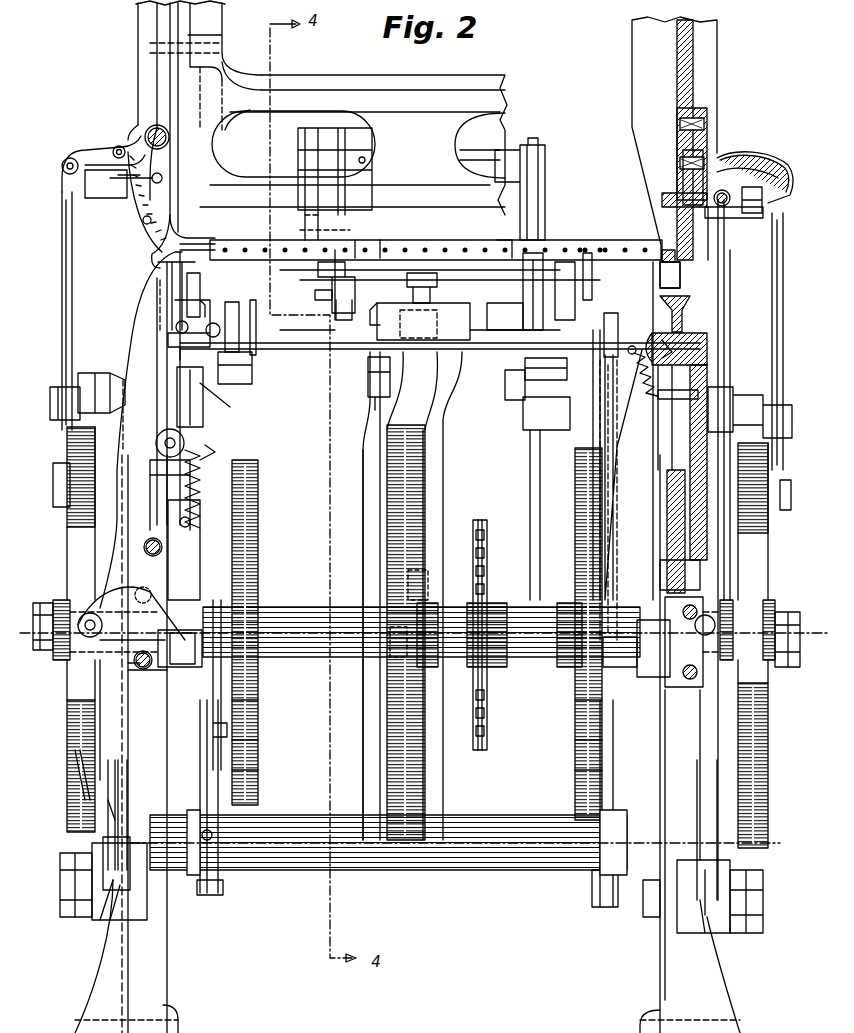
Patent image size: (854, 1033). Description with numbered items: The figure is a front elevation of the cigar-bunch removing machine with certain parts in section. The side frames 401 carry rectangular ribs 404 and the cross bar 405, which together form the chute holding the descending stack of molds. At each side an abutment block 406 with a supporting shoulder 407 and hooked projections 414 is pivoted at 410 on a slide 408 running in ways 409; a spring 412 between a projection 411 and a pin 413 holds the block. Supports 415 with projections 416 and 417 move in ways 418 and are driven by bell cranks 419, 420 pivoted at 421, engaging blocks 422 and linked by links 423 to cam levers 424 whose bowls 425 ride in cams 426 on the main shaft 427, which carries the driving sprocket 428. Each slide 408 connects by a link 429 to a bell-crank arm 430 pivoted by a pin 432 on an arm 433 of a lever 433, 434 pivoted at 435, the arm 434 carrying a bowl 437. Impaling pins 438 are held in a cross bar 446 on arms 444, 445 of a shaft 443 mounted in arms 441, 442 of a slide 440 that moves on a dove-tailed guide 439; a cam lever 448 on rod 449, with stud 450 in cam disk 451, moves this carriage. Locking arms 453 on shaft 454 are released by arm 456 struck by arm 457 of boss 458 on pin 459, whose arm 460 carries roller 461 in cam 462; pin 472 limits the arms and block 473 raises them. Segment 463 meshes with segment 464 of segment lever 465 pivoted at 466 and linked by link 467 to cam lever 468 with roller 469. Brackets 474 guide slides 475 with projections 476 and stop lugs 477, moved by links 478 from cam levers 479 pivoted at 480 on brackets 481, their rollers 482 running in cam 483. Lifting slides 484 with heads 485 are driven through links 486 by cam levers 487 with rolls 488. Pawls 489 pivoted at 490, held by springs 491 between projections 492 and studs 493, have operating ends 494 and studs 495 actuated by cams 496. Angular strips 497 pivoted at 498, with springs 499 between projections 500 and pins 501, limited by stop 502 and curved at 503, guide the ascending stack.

The side frames 401 is at (707, 975).
The rectangular ribs 404 is at (216, 18).
The cross bar 405 is at (353, 145).
The movable blocks 406 is at (192, 300).
The supporting shoulder 407 is at (185, 285).
The slide 408 is at (708, 340).
The ways 409 is at (688, 577).
The pivot 410 is at (686, 336).
The projection 411 is at (628, 343).
The spring 412 is at (605, 395).
The pin 413 is at (665, 400).
The hooked projections 414 is at (658, 268).
The supports 415 is at (708, 233).
The engaging projection 416 is at (662, 198).
The engaging projection 417 is at (660, 252).
The ways 418 is at (782, 168).
The bell crank arm 419 is at (738, 210).
The bell crank arm 420 is at (427, 169).
The pivot 421 is at (728, 180).
The pivoted block 422 is at (722, 212).
The links 423 is at (72, 272).
The cam levers 424 is at (62, 447).
The bowls 425 is at (55, 492).
The cams 426 is at (80, 547).
The main shaft 427 is at (298, 645).
The driving sprocket 428 is at (490, 553).
The link 429 is at (128, 697).
The bell-crank lever arm 430 is at (135, 845).
The pin 432 is at (90, 880).
The bell-crank lever arm 433 is at (95, 915).
The bell-crank lever arm 434 is at (100, 720).
The pivot 435 is at (60, 880).
The bowls 437 is at (70, 665).
The impaling pins 438 is at (598, 248).
The dove-tailed guide 439 is at (403, 322).
The slide 440 is at (435, 290).
The arm 441 is at (505, 226).
The arm 442 is at (335, 180).
The shaft 443 is at (475, 165).
The arm 444 is at (540, 208).
The arm 445 is at (300, 158).
The cross bar 446 is at (432, 250).
The cam lever 448 is at (437, 378).
The bar or rod 449 is at (645, 825).
The cam stud 450 is at (425, 572).
The cam disk 451 is at (406, 632).
The locking arms 453 is at (548, 274).
The shaft 454 is at (385, 250).
The arm 456 is at (543, 291).
The arm 457 is at (525, 392).
The boss 458 is at (537, 515).
The pin 459 is at (523, 420).
The arm 460 is at (575, 490).
The cam roller 461 is at (568, 595).
The cam 462 is at (597, 500).
The segment 463 is at (375, 145).
The segment 464 is at (370, 237).
The segment lever 465 is at (305, 295).
The pivot 466 is at (333, 310).
The link 467 is at (366, 380).
The cam lever 468 is at (370, 466).
The stud or roller 469 is at (385, 660).
The pin 472 is at (572, 291).
The block 473 is at (504, 316).
The bracket 474 is at (393, 379).
The slide 475 is at (422, 336).
The projection 476 is at (434, 322).
The stop lug 477 is at (440, 335).
The link 478 is at (205, 420).
The cam levers 479 is at (245, 455).
The pivot 480 is at (195, 668).
The brackets 481 is at (164, 585).
The cam rollers 482 is at (259, 735).
The cam 483 is at (259, 565).
The lifting slides 484 is at (218, 428).
The head 485 is at (170, 343).
The link 486 is at (212, 722).
The cam lever 487 is at (222, 870).
The cam roll 488 is at (575, 775).
The pivoted pawls 489 is at (125, 385).
The pivot 490 is at (156, 445).
The spring 491 is at (168, 502).
The projections 492 is at (210, 478).
The studs 493 is at (169, 521).
The operating ends 494 is at (150, 285).
The studs 495 is at (88, 612).
The cams 496 is at (68, 770).
The angular strips 497 is at (158, 139).
The pivot 498 is at (146, 128).
The springs 499 is at (138, 206).
The projections 500 is at (139, 159).
The pins 501 is at (143, 223).
The stop 502 is at (163, 183).
The curved lower ends 503 is at (217, 234).